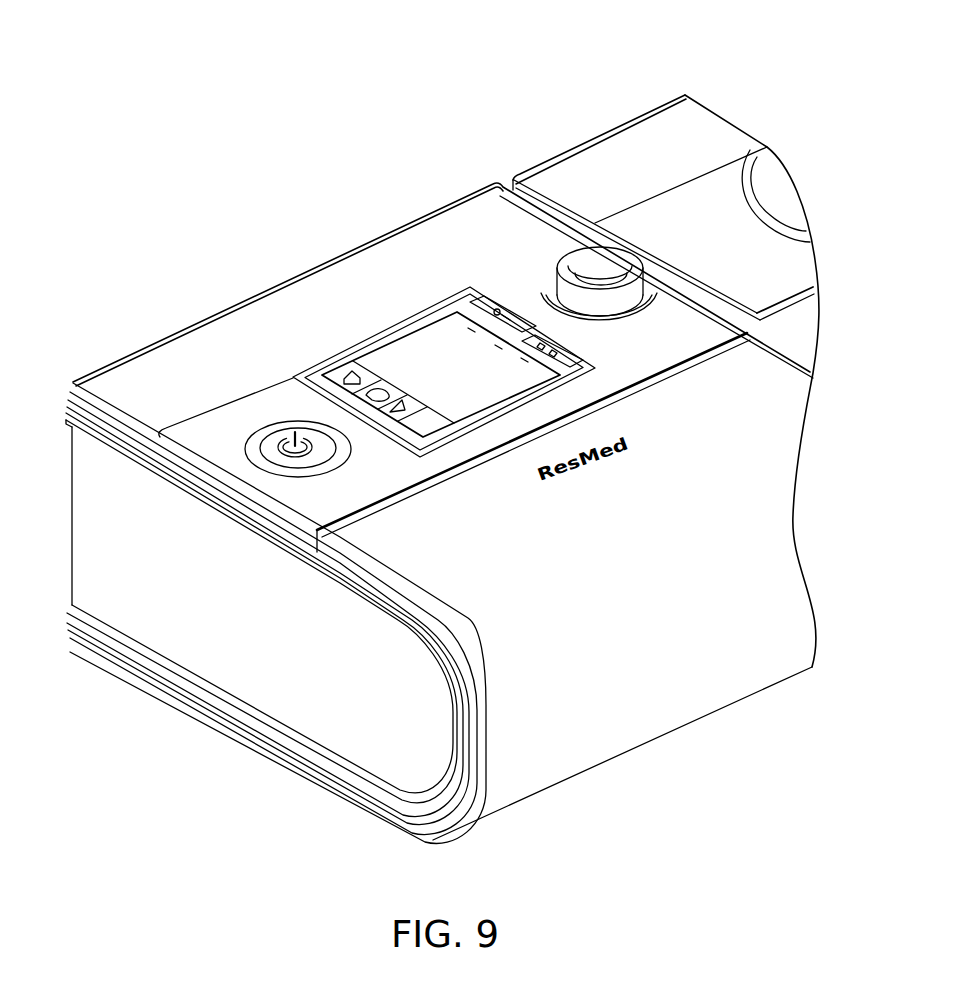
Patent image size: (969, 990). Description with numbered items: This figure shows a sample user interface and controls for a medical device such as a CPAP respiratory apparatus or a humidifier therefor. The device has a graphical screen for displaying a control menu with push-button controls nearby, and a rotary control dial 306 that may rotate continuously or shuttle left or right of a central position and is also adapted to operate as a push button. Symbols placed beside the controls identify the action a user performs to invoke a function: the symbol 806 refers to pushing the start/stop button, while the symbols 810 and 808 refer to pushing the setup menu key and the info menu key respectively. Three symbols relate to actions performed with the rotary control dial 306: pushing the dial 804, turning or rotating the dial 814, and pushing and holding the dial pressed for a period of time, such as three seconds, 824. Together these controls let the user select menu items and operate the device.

The rotary control dial 306 is at (592, 272).
The symbol for pushing the dial 804 is at (583, 267).
The symbol for turning the dial 814 is at (510, 90).
The symbol for pushing and holding the dial 824 is at (413, 130).
The symbol for pushing the start/stop button 806 is at (290, 447).
The symbol for pushing the info menu key 808 is at (538, 338).
The symbol for pushing the setup menu key 810 is at (483, 301).